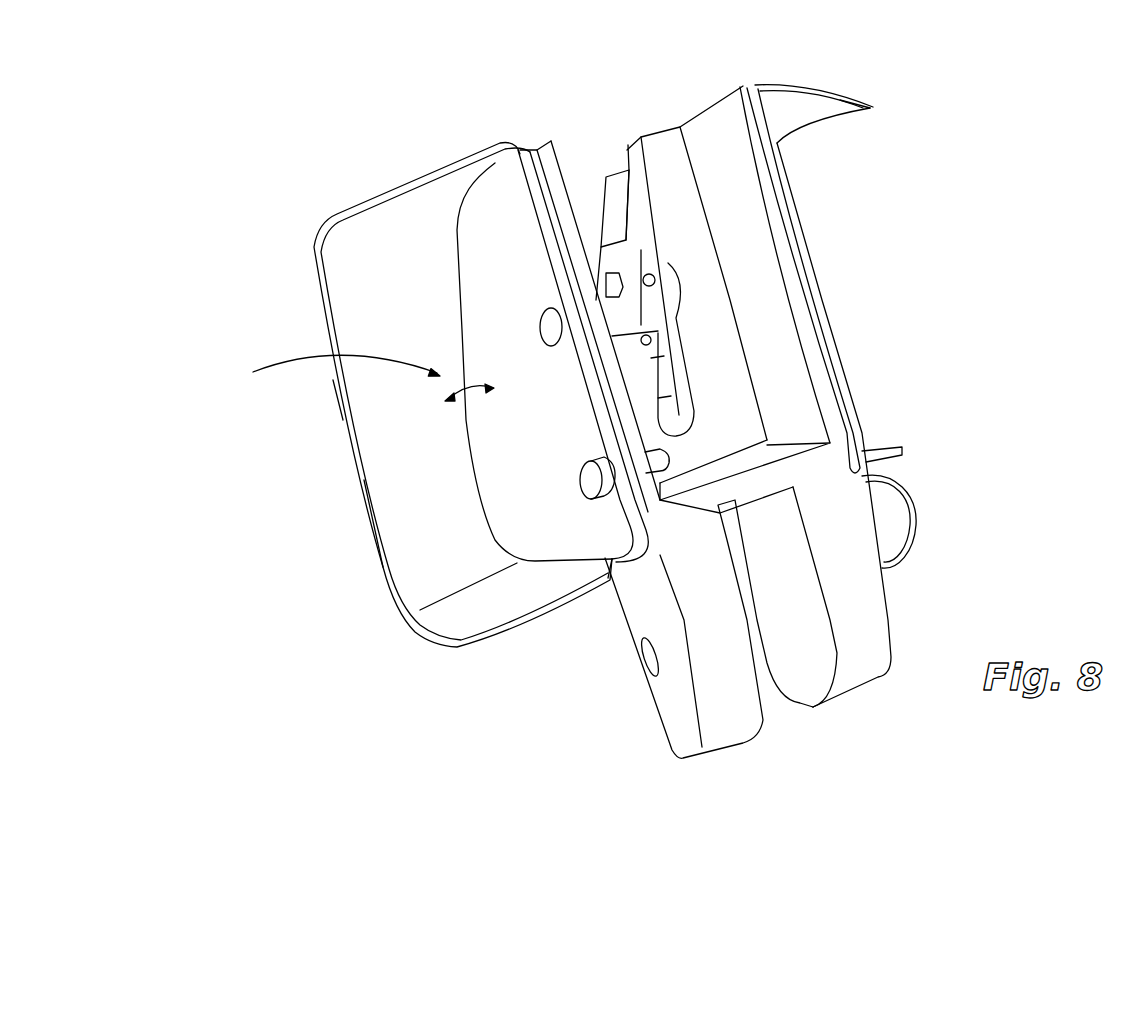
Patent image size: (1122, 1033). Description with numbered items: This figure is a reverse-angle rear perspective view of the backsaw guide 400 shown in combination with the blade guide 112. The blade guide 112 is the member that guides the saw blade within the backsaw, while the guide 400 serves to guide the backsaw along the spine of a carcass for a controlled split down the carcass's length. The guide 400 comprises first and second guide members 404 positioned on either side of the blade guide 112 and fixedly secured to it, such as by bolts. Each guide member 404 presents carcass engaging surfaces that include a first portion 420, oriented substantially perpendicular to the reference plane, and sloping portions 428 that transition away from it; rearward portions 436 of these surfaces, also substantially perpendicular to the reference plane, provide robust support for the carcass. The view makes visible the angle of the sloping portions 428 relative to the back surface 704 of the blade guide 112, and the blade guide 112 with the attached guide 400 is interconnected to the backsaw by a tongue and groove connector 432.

The blade guide 112 is at (608, 130).
The backsaw guide 400 is at (907, 265).
The guide member 404 is at (337, 411).
The first portion 420 is at (438, 162).
The sloping portion 428 is at (362, 480).
The tongue and groove connector 432 is at (706, 757).
The rearward portion 436 is at (903, 450).
The back surface 704 is at (557, 160).